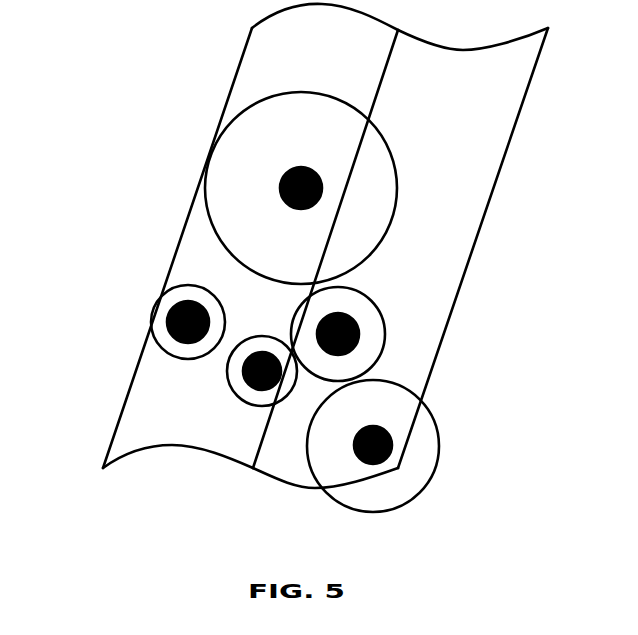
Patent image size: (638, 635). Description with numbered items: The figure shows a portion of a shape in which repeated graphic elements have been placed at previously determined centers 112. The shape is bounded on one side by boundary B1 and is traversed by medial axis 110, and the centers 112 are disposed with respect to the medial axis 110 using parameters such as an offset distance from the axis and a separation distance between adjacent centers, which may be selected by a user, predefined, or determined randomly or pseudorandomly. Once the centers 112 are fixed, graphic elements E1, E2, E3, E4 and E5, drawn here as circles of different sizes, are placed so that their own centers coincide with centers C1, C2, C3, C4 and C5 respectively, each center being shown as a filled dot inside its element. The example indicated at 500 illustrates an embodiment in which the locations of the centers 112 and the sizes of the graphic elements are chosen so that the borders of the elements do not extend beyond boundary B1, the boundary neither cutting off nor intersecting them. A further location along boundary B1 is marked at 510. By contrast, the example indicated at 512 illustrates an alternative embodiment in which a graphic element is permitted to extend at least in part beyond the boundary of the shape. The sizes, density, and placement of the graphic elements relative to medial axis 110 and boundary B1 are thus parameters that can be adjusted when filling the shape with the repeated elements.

The placement example within boundary 500 is at (295, 272).
The centers 112 is at (295, 244).
The boundary B1 is at (250, 234).
The medial axis 110 is at (400, 250).
The left edge of substrate 510 is at (205, 144).
The placement example beyond boundary 512 is at (432, 397).
The graphic element E1 is at (401, 461).
The graphic element E2 is at (362, 324).
The graphic element E3 is at (222, 379).
The graphic element E4 is at (161, 294).
The graphic element E5 is at (301, 167).
The center C1 is at (374, 464).
The center C2 is at (357, 325).
The center C3 is at (243, 374).
The center C4 is at (184, 301).
The center C5 is at (300, 166).